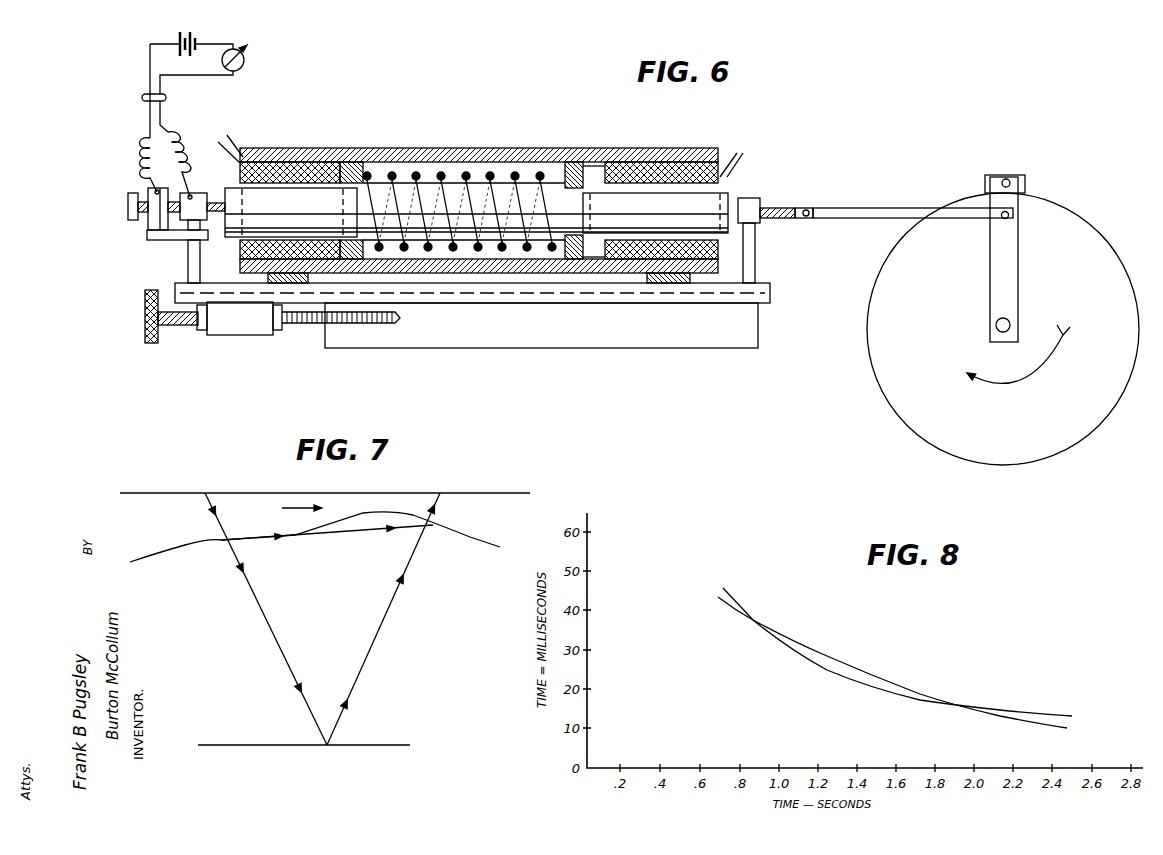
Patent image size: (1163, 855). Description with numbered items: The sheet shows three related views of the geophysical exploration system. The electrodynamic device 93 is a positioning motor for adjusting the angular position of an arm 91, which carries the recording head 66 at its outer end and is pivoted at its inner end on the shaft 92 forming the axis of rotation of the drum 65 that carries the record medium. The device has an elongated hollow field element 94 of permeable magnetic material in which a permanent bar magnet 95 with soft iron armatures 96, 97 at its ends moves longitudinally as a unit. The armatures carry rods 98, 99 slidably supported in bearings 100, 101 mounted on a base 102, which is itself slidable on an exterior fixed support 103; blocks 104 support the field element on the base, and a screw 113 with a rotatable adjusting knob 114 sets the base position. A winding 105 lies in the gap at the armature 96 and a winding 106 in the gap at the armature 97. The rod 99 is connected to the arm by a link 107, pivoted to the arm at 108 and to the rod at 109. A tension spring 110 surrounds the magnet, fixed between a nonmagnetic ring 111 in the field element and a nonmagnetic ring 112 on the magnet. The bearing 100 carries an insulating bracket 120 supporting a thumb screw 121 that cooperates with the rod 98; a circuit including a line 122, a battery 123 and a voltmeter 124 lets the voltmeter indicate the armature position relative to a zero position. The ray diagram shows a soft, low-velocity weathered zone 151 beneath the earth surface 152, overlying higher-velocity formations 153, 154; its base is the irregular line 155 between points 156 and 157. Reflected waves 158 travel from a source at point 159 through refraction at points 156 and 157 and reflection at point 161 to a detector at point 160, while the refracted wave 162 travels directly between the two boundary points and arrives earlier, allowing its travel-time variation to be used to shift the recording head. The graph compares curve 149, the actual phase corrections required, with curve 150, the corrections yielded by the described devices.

In FIG. 6, the drum 65 is at (933, 430).
In FIG. 6, the recording head 66 is at (1030, 167).
In FIG. 6, the arm 91 is at (1018, 264).
In FIG. 6, the shaft 92 is at (996, 326).
In FIG. 6, the electrodynamic device 93 is at (507, 112).
In FIG. 6, the field element 94 is at (534, 153).
In FIG. 6, the permanent bar magnet 95 is at (483, 191).
In FIG. 6, the armature 96 is at (309, 211).
In FIG. 6, the armature 97 is at (664, 219).
In FIG. 6, the rod 98 is at (222, 212).
In FIG. 6, the rod 99 is at (778, 218).
In FIG. 6, the bearing 100 is at (190, 197).
In FIG. 6, the bearing 101 is at (748, 198).
In FIG. 6, the base 102 is at (589, 303).
In FIG. 6, the support 103 is at (516, 348).
In FIG. 6, the blocks 104 is at (282, 285).
In FIG. 6, the winding 105 is at (303, 157).
In FIG. 6, the winding 106 is at (686, 169).
In FIG. 6, the link 107 is at (855, 218).
In FIG. 6, the pivotal connection 108 is at (1009, 219).
In FIG. 6, the pivotal connection 109 is at (806, 208).
In FIG. 6, the spring 110 is at (420, 173).
In FIG. 6, the nonmagnetic ring 111 is at (368, 163).
In FIG. 6, the nonmagnetic ring 112 is at (578, 163).
In FIG. 6, the screw 113 is at (313, 327).
In FIG. 6, the adjusting knob 114 is at (146, 328).
In FIG. 6, the insulating bracket 120 is at (150, 242).
In FIG. 6, the thumb screw 121 is at (148, 204).
In FIG. 6, the line 122 is at (166, 98).
In FIG. 6, the battery 123 is at (168, 44).
In FIG. 6, the voltmeter 124 is at (246, 61).
In FIG. 8, the curve 149 is at (827, 670).
In FIG. 8, the curve 150 is at (820, 655).
In FIG. 7, the weathered zone 151 is at (170, 531).
In FIG. 7, the earth surface 152 is at (136, 493).
In FIG. 7, the underlying formation 153 is at (212, 616).
In FIG. 7, the underlying formation 154 is at (265, 747).
In FIG. 7, the irregular line 155 is at (315, 530).
In FIG. 7, the refraction point 156 is at (226, 536).
In FIG. 7, the refraction point 157 is at (445, 528).
In FIG. 7, the reflected waves 158 is at (298, 629).
In FIG. 7, the source point 159 is at (208, 493).
In FIG. 7, the detector point 160 is at (442, 493).
In FIG. 7, the reflection point 161 is at (327, 746).
In FIG. 7, the refracted wave 162 is at (363, 533).